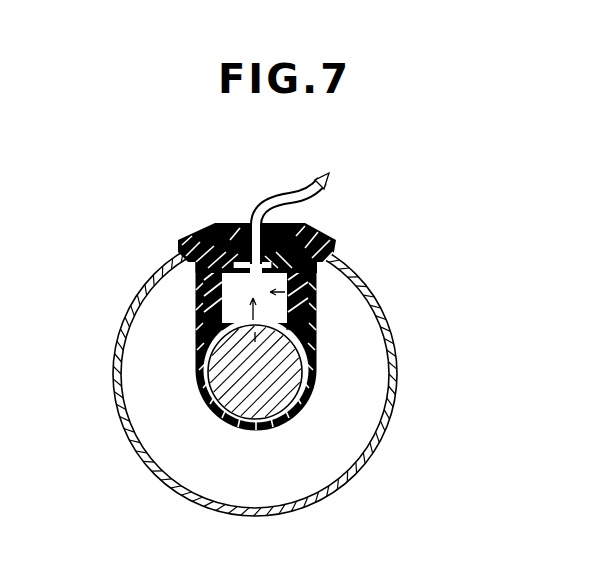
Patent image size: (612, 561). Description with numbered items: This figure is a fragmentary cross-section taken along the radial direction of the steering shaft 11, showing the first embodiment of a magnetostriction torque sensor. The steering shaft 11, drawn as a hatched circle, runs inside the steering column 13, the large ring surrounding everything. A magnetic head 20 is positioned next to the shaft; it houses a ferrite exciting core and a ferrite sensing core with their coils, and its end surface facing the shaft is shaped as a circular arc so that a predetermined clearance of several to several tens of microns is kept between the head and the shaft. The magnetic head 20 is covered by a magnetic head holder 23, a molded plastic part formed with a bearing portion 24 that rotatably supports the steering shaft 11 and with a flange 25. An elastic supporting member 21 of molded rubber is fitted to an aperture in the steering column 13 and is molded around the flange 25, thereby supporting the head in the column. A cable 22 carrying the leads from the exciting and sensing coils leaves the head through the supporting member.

The steering shaft 11 is at (256, 404).
The steering column 13 is at (398, 358).
The magnetic head 20 is at (313, 295).
The elastic supporting member 21 is at (220, 224).
The cable 22 is at (328, 192).
The magnetic head holder 23 is at (197, 298).
The bearing portion 24 is at (317, 375).
The flange 25 is at (236, 226).